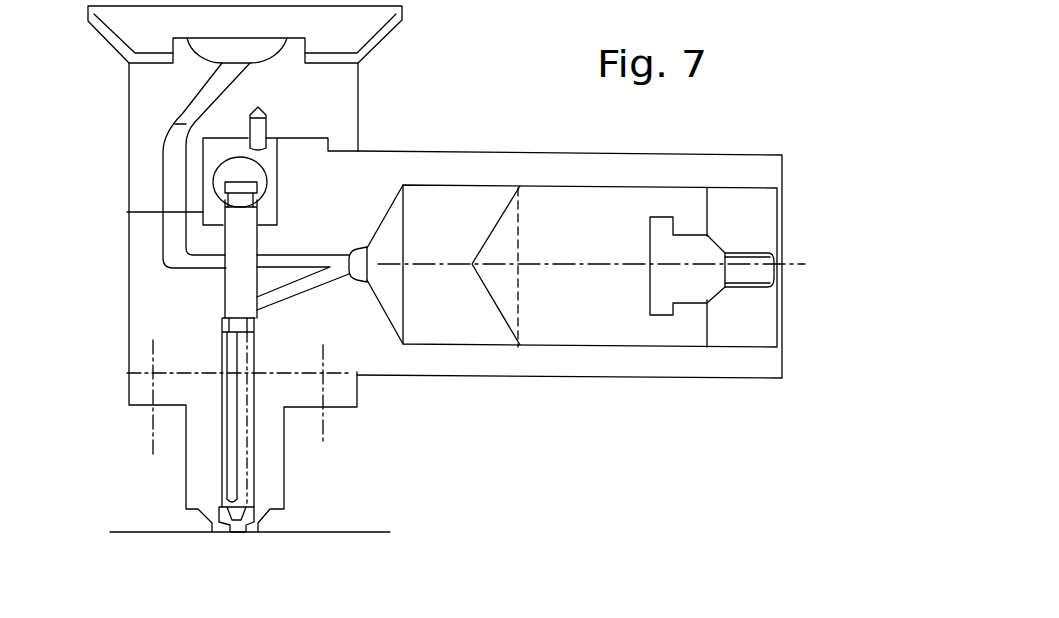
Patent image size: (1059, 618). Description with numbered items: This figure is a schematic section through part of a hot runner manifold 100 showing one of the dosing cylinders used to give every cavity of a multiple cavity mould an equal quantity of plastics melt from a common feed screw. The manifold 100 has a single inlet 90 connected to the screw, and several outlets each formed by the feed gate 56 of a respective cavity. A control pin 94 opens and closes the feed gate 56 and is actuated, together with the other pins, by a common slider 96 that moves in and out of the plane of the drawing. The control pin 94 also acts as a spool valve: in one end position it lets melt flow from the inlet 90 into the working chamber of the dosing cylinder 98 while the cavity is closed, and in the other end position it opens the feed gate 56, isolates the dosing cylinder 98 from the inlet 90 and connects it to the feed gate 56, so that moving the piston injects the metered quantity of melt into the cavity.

The inlet 90 is at (195, 88).
The control pin 94 is at (228, 292).
The common slider 96 is at (273, 168).
The dosing cylinder 98 is at (565, 200).
The manifold 100 is at (443, 128).
The feed gate 56 is at (254, 510).